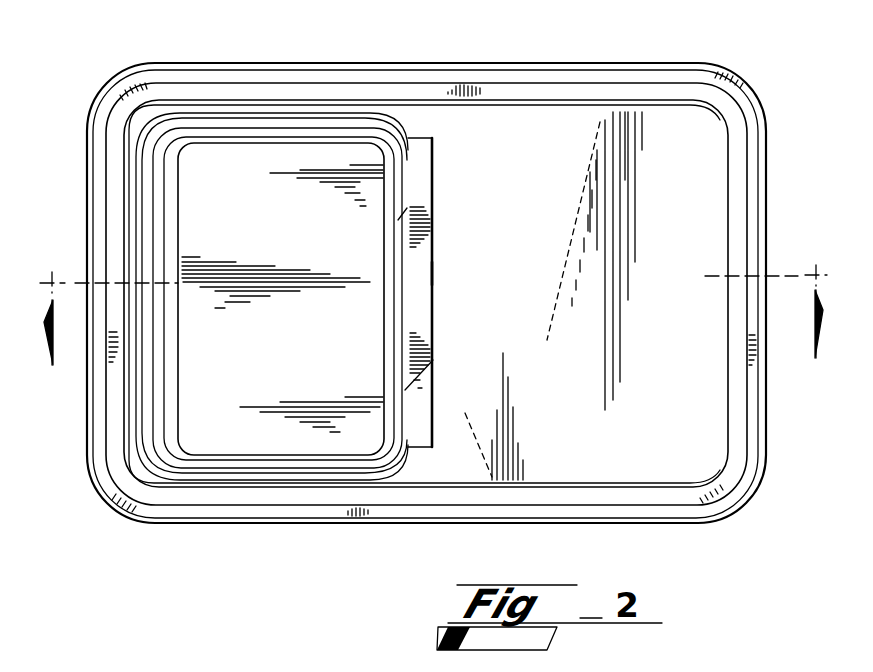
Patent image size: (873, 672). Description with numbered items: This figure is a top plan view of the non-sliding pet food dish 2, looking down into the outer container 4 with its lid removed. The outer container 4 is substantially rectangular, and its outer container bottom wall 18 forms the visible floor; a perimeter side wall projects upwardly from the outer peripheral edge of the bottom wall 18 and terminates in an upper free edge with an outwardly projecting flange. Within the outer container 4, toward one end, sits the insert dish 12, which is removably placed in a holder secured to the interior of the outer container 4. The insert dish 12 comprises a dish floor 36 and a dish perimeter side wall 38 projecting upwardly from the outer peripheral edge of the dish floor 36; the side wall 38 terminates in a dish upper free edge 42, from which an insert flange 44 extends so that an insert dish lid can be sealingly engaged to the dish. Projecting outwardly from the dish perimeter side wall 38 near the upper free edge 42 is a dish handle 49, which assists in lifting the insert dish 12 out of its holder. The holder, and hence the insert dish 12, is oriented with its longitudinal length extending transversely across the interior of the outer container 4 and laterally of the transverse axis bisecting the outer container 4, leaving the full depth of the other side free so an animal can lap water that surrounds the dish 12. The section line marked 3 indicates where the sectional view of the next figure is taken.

The non-sliding pet food dish 2 is at (152, 26).
The outer container 4 is at (600, 88).
The outer container bottom wall 18 is at (682, 435).
The dish floor 36 is at (295, 239).
The dish perimeter side wall 38 is at (258, 462).
The dish handle 49 is at (420, 182).
The insert flange 44 is at (413, 210).
The insert dish 12 is at (432, 273).
The dish upper free edge 42 is at (433, 360).
The section line 3- 3 is at (431, 303).